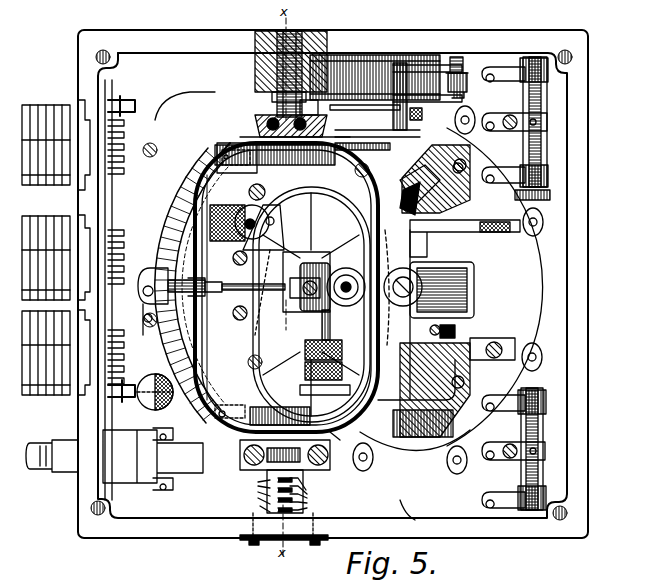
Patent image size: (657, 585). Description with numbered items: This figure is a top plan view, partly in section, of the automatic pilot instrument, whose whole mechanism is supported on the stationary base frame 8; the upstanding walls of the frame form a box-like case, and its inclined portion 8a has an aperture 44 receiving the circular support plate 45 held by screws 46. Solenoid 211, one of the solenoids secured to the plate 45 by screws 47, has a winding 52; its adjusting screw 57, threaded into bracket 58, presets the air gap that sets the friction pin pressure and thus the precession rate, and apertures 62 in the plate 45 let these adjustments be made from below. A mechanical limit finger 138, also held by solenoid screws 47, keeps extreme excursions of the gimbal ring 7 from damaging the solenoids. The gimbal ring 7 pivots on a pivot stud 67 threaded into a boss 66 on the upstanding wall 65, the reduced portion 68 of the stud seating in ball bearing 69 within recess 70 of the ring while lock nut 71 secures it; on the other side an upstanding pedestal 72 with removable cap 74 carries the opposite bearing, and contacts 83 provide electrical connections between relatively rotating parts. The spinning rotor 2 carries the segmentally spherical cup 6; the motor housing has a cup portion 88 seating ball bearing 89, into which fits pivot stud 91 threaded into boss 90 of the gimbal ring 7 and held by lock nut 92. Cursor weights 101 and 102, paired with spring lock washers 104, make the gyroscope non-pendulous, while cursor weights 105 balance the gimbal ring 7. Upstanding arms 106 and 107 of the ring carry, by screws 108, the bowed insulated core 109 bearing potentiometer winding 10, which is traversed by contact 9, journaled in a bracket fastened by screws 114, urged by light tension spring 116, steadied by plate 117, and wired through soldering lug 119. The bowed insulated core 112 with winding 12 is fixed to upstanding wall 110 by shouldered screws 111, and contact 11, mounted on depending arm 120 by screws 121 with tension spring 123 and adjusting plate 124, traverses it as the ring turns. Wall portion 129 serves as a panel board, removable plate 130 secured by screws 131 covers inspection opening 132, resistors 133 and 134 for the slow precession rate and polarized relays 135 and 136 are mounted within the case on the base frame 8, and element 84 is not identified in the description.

The spinning rotor 2 is at (304, 200).
The segmentally spherical cup 6 is at (390, 270).
The gimbal ring 7 is at (339, 441).
The base frame 8 is at (110, 80).
The inclined portion 8a is at (416, 517).
The slider 9 is at (160, 280).
The potentiometer winding 10 is at (168, 352).
The slider 11 is at (404, 66).
The potentiometer winding 12 is at (352, 52).
The aperture 44 is at (420, 456).
The circular support plate 45 is at (520, 272).
The screws 46 is at (472, 128).
The screws 47 is at (484, 220).
The winding 52 is at (420, 185).
The adjusting screw 57 is at (404, 200).
The bracket 58 is at (441, 254).
The apertures 62 is at (436, 440).
The upstanding wall 65 is at (206, 48).
The boss 66 is at (262, 46).
The pivot stud 67 is at (282, 62).
The reduced portion 68 is at (295, 126).
The ball bearing 69 is at (317, 106).
The recess 70 is at (256, 114).
The lock nut 71 is at (272, 78).
The upstanding pedestal 72 is at (245, 470).
The removable cap 74 is at (304, 472).
The contacts 83 is at (307, 494).
The contact springs 84 is at (250, 496).
The cup portion 88 is at (318, 264).
The ball bearing 89 is at (347, 268).
The boss 90 is at (360, 305).
The pivot stud 91 is at (414, 280).
The lock nut 92 is at (394, 287).
The cursor weight 101 is at (247, 259).
The cursor weight 102 is at (308, 346).
The spring lock washer 104 is at (298, 386).
The cursor weights 105 is at (150, 408).
The upstanding arm 106 is at (240, 142).
The upstanding arm 107 is at (235, 430).
The screws 108 is at (224, 410).
The bowed insulated core 109 is at (212, 160).
The upstanding wall 110 is at (150, 47).
The shouldered screws 111 is at (460, 56).
The bowed insulated core 112 is at (468, 82).
The screws 114 is at (250, 262).
The light tension spring 116 is at (245, 284).
The plate 117 is at (170, 232).
The soldering lug 119 is at (299, 286).
The depending arm 120 is at (365, 100).
The screws 121 is at (384, 150).
The tension spring 123 is at (384, 135).
The adjusting plate 124 is at (421, 115).
The upstanding wall portion 129 is at (80, 412).
The removable plate 130 is at (288, 540).
The screws 131 is at (248, 544).
The inspection opening 132 is at (316, 526).
The resistor 133 is at (548, 104).
The resistor 134 is at (524, 427).
The polarized relay 135 is at (165, 100).
The polarized relay 136 is at (140, 300).
The mechanical limit finger 138 is at (440, 234).
The solenoid 211 is at (468, 298).